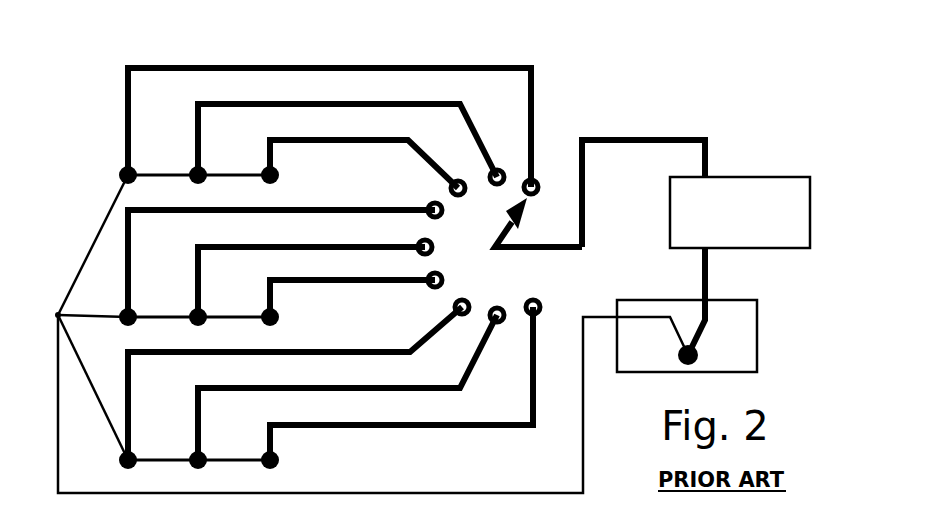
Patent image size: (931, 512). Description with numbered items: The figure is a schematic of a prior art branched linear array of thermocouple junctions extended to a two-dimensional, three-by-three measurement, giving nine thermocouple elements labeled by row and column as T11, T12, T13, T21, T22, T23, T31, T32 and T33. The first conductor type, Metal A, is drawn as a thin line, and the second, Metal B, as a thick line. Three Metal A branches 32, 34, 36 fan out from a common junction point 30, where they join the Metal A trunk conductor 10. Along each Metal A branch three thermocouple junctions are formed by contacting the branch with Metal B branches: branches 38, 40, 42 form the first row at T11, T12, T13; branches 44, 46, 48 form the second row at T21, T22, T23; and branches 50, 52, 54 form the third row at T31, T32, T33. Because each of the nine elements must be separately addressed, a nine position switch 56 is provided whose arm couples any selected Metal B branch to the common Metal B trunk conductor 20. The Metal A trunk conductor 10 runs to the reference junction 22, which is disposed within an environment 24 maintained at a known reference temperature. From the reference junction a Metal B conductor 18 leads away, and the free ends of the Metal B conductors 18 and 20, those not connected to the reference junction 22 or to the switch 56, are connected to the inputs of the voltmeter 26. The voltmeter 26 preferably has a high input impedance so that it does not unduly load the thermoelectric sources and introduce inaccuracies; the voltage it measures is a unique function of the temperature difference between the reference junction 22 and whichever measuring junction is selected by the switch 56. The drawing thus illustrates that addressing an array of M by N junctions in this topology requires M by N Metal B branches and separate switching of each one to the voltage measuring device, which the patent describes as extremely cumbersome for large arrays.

The Metal A trunk conductor 10 is at (530, 492).
The Metal B conductor 18 is at (713, 263).
The Metal B trunk conductor 20 is at (637, 150).
The reference junction 22 is at (673, 363).
The environment 24 is at (722, 335).
The voltmeter 26 is at (770, 175).
The junction point 30 is at (53, 303).
The Metal A branch 32 is at (93, 233).
The Metal A branch 34 is at (88, 320).
The Metal A branch 36 is at (83, 382).
The Metal B branch 38 is at (305, 62).
The Metal B branch 40 is at (357, 97).
The Metal B branch 42 is at (388, 132).
The Metal B branch 44 is at (320, 203).
The Metal B branch 46 is at (350, 240).
The Metal B branch 48 is at (343, 288).
The Metal B branch 50 is at (300, 362).
The Metal B branch 52 is at (352, 397).
The Metal B branch 54 is at (407, 435).
The nine position switch 56 is at (537, 253).
The thermocouple element T11 is at (110, 167).
The thermocouple element T12 is at (180, 167).
The thermocouple element T13 is at (251, 167).
The thermocouple element T21 is at (110, 309).
The thermocouple element T22 is at (180, 309).
The thermocouple element T23 is at (251, 309).
The thermocouple element T31 is at (104, 461).
The thermocouple element T32 is at (181, 450).
The thermocouple element T33 is at (251, 450).